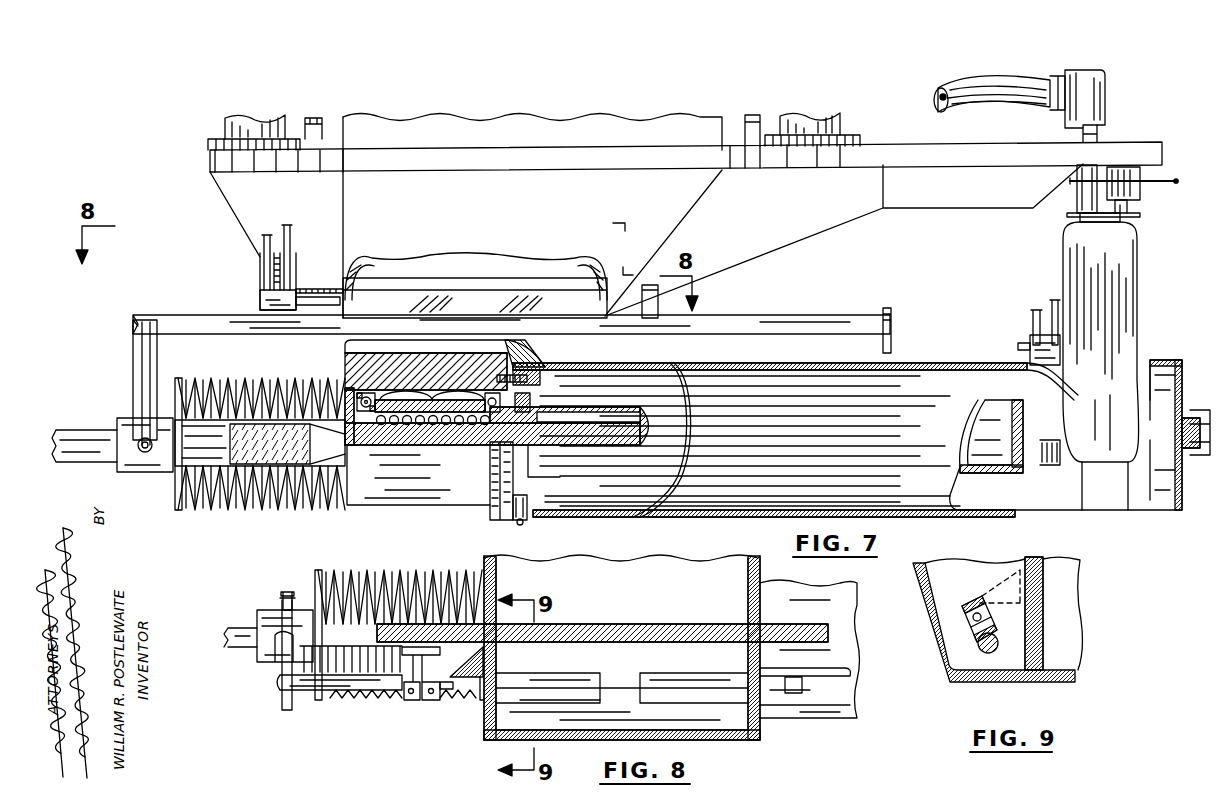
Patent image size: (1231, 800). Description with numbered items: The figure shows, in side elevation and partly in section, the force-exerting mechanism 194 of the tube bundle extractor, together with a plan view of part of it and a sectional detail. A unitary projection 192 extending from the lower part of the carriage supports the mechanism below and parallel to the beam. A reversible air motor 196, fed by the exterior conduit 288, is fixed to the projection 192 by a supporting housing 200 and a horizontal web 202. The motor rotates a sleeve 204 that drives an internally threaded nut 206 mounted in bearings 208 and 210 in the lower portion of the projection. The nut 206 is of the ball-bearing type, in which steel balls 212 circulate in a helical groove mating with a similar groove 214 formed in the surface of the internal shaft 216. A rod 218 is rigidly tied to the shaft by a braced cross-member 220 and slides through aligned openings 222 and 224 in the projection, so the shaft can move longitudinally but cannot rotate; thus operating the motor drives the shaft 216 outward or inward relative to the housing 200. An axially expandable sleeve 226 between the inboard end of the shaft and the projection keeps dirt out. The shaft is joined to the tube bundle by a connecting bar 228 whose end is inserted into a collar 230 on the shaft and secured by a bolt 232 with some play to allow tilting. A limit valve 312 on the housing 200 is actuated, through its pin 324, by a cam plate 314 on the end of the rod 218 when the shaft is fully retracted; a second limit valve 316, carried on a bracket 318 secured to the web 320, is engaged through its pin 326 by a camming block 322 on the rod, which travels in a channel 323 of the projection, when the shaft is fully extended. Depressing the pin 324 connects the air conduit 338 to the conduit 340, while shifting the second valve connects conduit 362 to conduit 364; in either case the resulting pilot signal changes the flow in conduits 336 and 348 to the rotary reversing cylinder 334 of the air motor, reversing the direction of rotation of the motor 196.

In FIG. 7, the unitary projection 192 is at (646, 216).
In FIG. 8, the unitary projection 192 is at (622, 647).
In FIG. 9, the unitary projection 192 is at (938, 626).
In FIG. 7, the force-exerting mechanism 194 is at (1118, 516).
In FIG. 8, the force-exerting mechanism 194 is at (838, 712).
In FIG. 7, the reversible air motor 196 is at (1140, 292).
In FIG. 7, the supporting housing 200 is at (795, 440).
In FIG. 7, the horizontal web 202 is at (913, 143).
In FIG. 7, the sleeve 204 is at (996, 470).
In FIG. 7, the internally threaded nut 206 is at (416, 430).
In FIG. 7, the bearing 208 is at (470, 347).
In FIG. 7, the bearing 210 is at (358, 398).
In FIG. 7, the steel balls 212 is at (447, 430).
In FIG. 7, the helical groove 214 is at (362, 430).
In FIG. 7, the internal shaft 216 is at (472, 448).
In FIG. 7, the rod 218 is at (181, 316).
In FIG. 8, the rod 218 is at (309, 702).
In FIG. 9, the rod 218 is at (985, 646).
In FIG. 7, the braced cross-member 220 is at (133, 348).
In FIG. 8, the braced cross-member 220 is at (280, 675).
In FIG. 7, the opening 222 is at (533, 343).
In FIG. 7, the opening 224 is at (343, 331).
In FIG. 9, the opening 224 is at (990, 654).
In FIG. 7, the axially expandable sleeve 226 is at (260, 500).
In FIG. 8, the axially expandable sleeve 226 is at (346, 574).
In FIG. 7, the connecting bar 228 is at (73, 430).
In FIG. 8, the connecting bar 228 is at (235, 650).
In FIG. 7, the collar 230 is at (126, 418).
In FIG. 8, the collar 230 is at (265, 610).
In FIG. 7, the bolt 232 is at (145, 453).
In FIG. 8, the bolt 232 is at (287, 592).
In FIG. 7, the exterior conduit 288 is at (985, 86).
In FIG. 7, the limit valve 312 is at (1029, 340).
In FIG. 7, the cam plate 314 is at (882, 345).
In FIG. 7, the second limit valve 316 is at (258, 302).
In FIG. 8, the second limit valve 316 is at (412, 702).
In FIG. 9, the second limit valve 316 is at (964, 630).
In FIG. 7, the bracket 318 is at (297, 270).
In FIG. 8, the bracket 318 is at (497, 660).
In FIG. 7, the web 320 is at (238, 208).
In FIG. 7, the camming block 322 is at (652, 285).
In FIG. 8, the camming block 322 is at (795, 695).
In FIG. 7, the channel 323 is at (414, 280).
In FIG. 8, the channel 323 is at (564, 680).
In FIG. 9, the channel 323 is at (965, 598).
In FIG. 7, the pin 324 is at (1017, 347).
In FIG. 7, the pin 326 is at (341, 301).
In FIG. 8, the pin 326 is at (447, 692).
In FIG. 9, the pin 326 is at (964, 612).
In FIG. 7, the reversing cylinder 334 is at (1142, 193).
In FIG. 7, the conduit 336 is at (1160, 176).
In FIG. 7, the air conduit 338 is at (1050, 301).
In FIG. 7, the conduit 340 is at (1032, 314).
In FIG. 7, the conduit 348 is at (1070, 187).
In FIG. 7, the conduit 362 is at (262, 246).
In FIG. 7, the conduit 364 is at (291, 243).